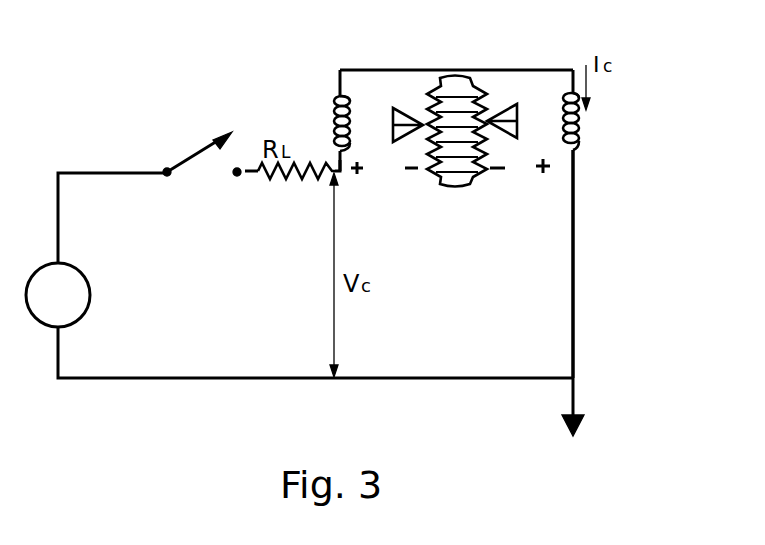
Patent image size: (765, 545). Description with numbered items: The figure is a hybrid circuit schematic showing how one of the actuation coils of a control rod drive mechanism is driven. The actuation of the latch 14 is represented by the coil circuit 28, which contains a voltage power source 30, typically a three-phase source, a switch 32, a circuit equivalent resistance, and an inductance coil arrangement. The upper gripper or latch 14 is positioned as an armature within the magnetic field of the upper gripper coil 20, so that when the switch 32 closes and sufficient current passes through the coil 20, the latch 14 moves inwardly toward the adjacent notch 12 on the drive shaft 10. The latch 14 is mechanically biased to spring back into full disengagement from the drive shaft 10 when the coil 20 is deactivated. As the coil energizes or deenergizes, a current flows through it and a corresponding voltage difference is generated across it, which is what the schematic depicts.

The drive shaft 10 is at (442, 180).
The notch 12 is at (483, 122).
The latch 14 is at (505, 112).
The upper gripper coil 20 is at (580, 132).
The coil circuit 28 is at (578, 191).
The voltage power source 30 is at (80, 276).
The switch 32 is at (193, 157).